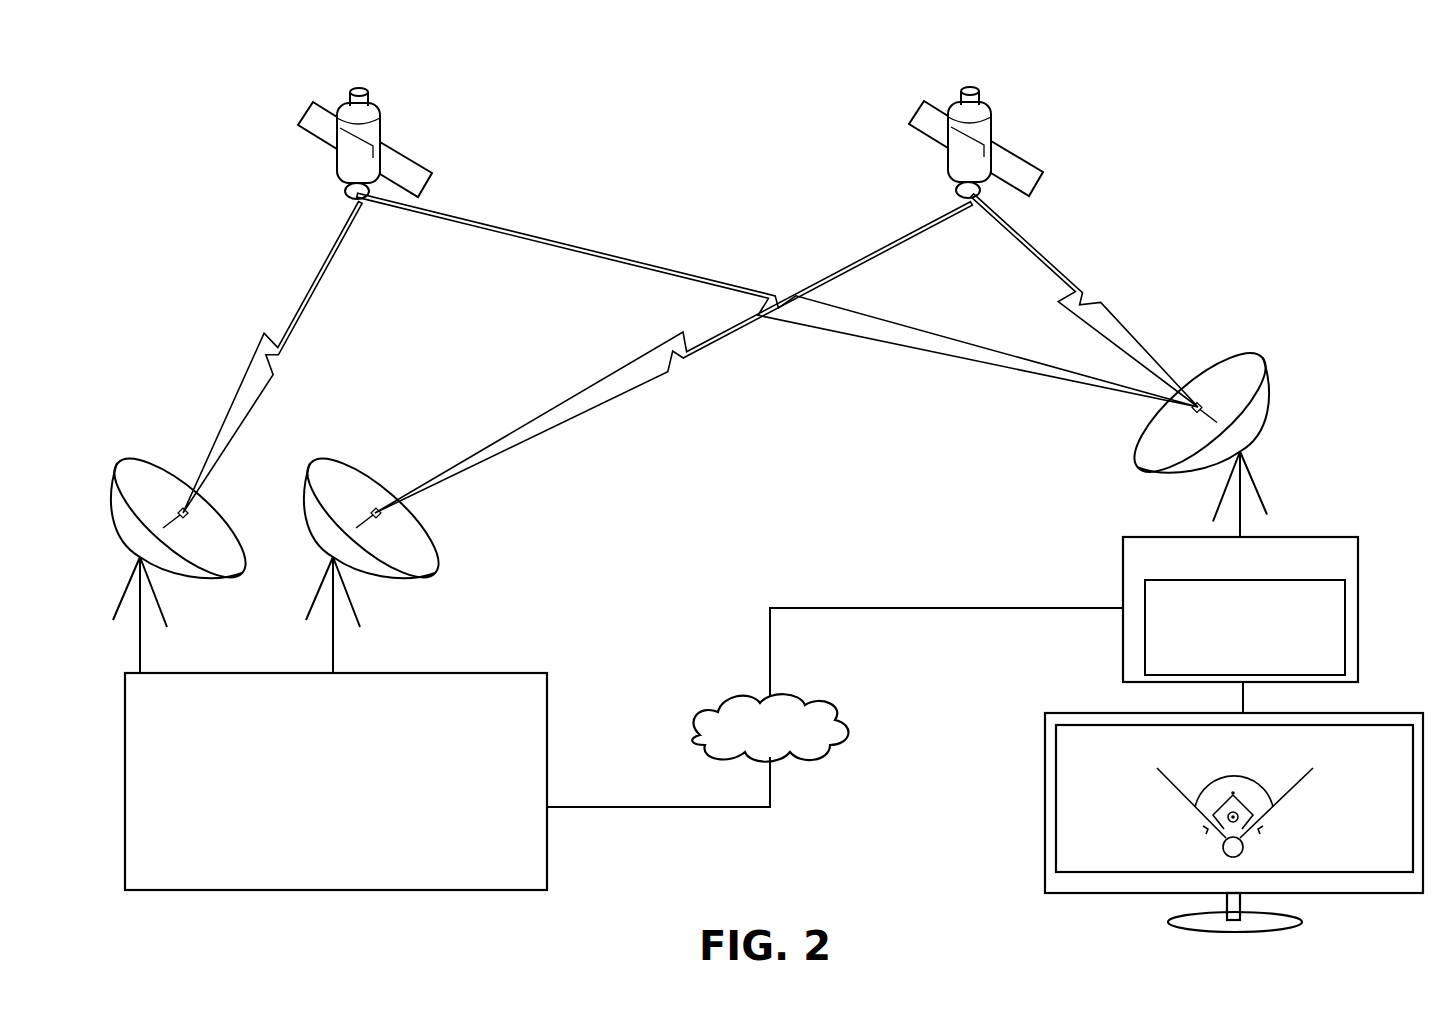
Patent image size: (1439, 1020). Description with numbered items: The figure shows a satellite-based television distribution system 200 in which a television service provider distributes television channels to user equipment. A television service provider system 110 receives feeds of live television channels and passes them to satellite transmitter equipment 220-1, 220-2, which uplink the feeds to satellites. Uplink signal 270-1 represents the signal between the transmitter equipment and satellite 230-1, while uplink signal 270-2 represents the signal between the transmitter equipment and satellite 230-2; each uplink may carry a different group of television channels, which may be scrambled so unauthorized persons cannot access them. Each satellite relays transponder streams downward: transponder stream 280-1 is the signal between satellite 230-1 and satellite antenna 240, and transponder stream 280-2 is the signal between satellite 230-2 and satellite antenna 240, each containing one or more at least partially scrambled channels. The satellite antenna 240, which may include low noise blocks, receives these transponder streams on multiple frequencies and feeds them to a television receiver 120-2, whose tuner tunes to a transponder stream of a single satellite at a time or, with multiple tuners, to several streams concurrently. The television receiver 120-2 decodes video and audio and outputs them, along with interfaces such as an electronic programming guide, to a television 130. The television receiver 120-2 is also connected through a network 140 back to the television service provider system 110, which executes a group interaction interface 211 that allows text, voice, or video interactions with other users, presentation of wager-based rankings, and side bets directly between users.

The satellite-based television distribution system 200 is at (146, 90).
The satellite 230-1 is at (343, 96).
The satellite 230-2 is at (1042, 168).
The uplink signal 270-1 is at (310, 291).
The uplink signal 270-2 is at (826, 273).
The transponder stream 280-1 is at (530, 236).
The transponder stream 280-2 is at (1080, 278).
The satellite transmitter equipment 220-1 is at (134, 462).
The satellite transmitter equipment 220-2 is at (323, 462).
The satellite antenna 240 is at (1241, 355).
The television service provider system 110 is at (535, 673).
The network 140 is at (700, 706).
The television receiver 120-2 is at (1240, 600).
The group interaction interface 211 is at (1338, 668).
The television 130 is at (1388, 713).